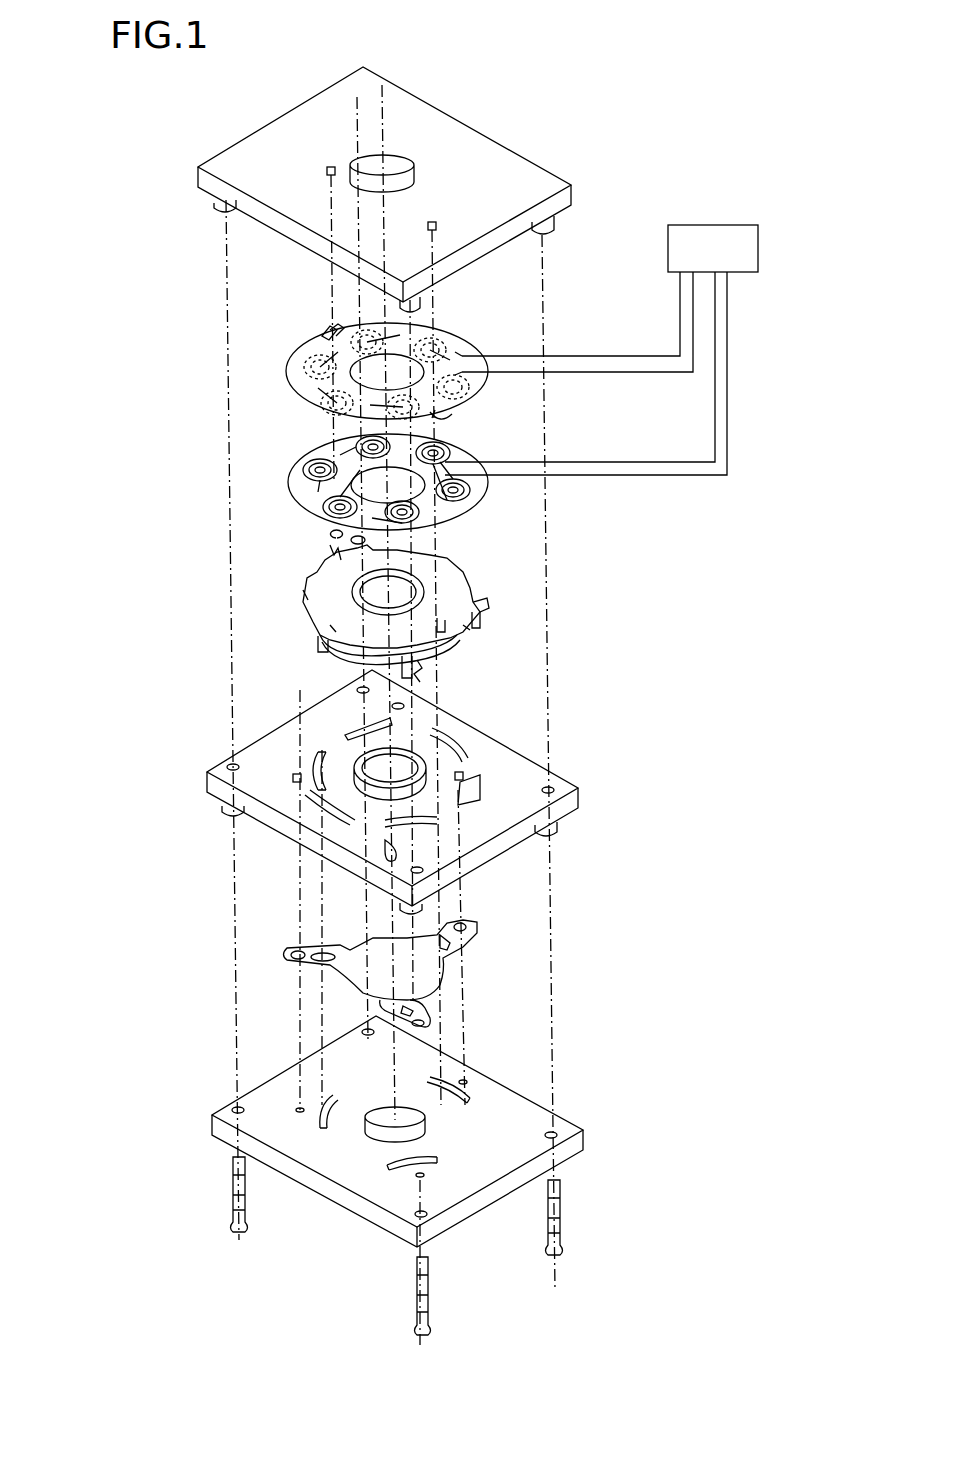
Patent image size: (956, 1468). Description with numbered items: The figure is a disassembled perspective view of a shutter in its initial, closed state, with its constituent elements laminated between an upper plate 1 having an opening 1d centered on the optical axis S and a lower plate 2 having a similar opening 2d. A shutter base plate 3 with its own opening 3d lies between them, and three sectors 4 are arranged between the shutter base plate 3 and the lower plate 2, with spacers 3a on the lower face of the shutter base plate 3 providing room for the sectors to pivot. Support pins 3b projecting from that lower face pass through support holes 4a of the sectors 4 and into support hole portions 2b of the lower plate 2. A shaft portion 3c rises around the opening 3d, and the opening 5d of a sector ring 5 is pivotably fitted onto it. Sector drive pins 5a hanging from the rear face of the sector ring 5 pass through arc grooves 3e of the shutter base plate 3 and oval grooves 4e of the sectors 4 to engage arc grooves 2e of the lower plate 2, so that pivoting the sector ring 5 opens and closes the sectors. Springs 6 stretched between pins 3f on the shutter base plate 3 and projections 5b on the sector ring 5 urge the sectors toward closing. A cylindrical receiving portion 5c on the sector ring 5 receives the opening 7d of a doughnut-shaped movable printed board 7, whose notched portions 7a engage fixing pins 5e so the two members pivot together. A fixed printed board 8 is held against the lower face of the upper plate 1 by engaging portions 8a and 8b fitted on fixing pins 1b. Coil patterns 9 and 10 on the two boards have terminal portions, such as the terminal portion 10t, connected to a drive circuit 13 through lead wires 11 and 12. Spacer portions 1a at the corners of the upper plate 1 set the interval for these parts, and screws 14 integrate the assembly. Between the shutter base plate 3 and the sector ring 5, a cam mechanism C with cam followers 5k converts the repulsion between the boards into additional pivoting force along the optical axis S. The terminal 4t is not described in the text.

The upper plate 1 is at (178, 188).
The spacer portions 1a is at (214, 210).
The fixing pins 1b is at (325, 170).
The opening 1d is at (398, 160).
The lower plate 2 is at (182, 1125).
The support hole portions 2b is at (295, 1108).
The opening 2d is at (375, 1128).
The arc grooves 2e is at (333, 1098).
The shutter base plate 3 is at (178, 785).
The spacers 3a is at (222, 812).
The support pins 3b is at (292, 778).
The shaft portion 3c is at (368, 780).
The opening 3d is at (405, 720).
The arc grooves 3e is at (315, 755).
The pins 3f is at (340, 690).
The sectors 4 is at (264, 965).
The support holes 4a is at (290, 952).
The oval grooves 4e is at (325, 952).
The terminal 4t is at (458, 468).
The sector ring 5 is at (290, 609).
The sector drive pins 5a is at (430, 660).
The projections 5b is at (305, 578).
The receiving portion 5c is at (405, 565).
The opening 5d is at (420, 572).
The fixing pins 5e is at (485, 604).
The cam followers 5k is at (318, 648).
The springs 6 is at (325, 542).
The movable printed board 7 is at (272, 488).
The notched portions 7a is at (335, 448).
The opening 7d is at (365, 480).
The fixed printed board 8 is at (272, 377).
The engaging portion 8a is at (448, 422).
The engaging portion 8b is at (330, 328).
The coil pattern 9 is at (472, 500).
The coil pattern 10 is at (305, 360).
The terminal portion 10t is at (455, 355).
The lead wires 11 is at (652, 480).
The lead wires 12 is at (620, 355).
The drive circuit 13 is at (712, 222).
The screws 14 is at (245, 1225).
The cam mechanism C is at (510, 760).
The optical axis S is at (405, 1248).